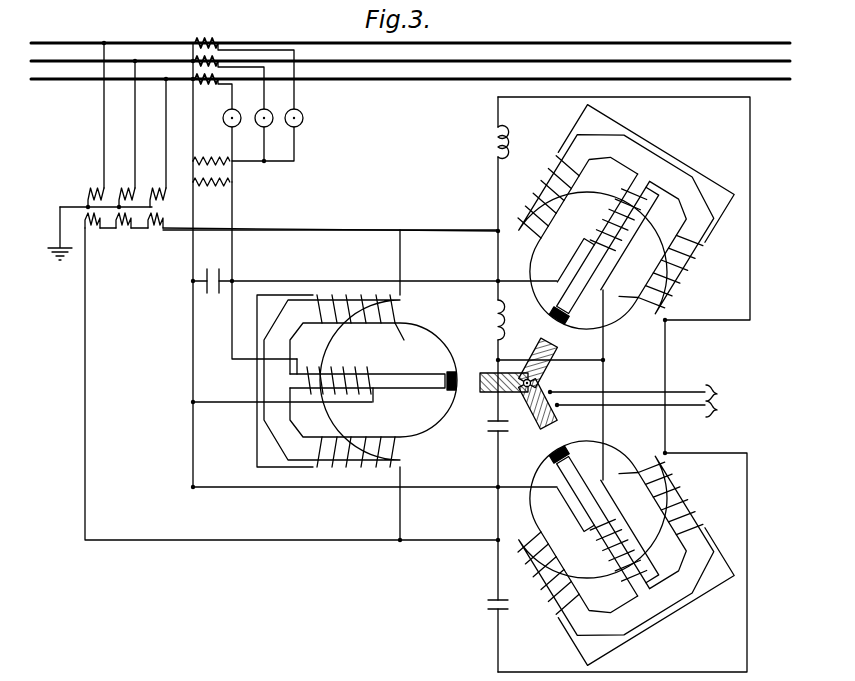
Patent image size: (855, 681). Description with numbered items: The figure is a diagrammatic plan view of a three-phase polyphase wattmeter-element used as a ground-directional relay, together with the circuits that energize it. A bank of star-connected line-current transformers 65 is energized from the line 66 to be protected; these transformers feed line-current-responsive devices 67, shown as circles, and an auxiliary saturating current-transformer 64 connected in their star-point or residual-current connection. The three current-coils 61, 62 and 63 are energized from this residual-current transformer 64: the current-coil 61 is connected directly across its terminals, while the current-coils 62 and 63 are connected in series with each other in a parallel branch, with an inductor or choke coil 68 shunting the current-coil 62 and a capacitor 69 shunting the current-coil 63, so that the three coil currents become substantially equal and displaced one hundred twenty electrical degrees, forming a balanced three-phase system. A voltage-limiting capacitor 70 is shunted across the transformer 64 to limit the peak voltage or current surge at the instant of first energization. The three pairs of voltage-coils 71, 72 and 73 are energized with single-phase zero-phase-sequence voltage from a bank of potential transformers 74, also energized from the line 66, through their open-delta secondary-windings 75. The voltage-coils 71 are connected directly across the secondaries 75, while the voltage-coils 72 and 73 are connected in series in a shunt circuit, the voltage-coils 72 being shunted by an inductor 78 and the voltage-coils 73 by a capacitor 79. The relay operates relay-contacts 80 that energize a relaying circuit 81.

The current-coil 61 is at (362, 371).
The current-coil 62 is at (618, 215).
The current-coil 63 is at (627, 540).
The auxiliary saturating current-transformer 64 is at (233, 173).
The line-current transformers 65 is at (214, 42).
The line 66 is at (553, 80).
The line-current-responsive devices 67 is at (300, 110).
The inductor or choke coil 68 is at (491, 318).
The capacitor 69 is at (490, 436).
The voltage-limiting capacitor 70 is at (212, 296).
The pair of voltage-coils 71 is at (404, 340).
The voltage-coils 72 is at (548, 242).
The voltage-coils 73 is at (574, 504).
The potential transformers 74 is at (88, 207).
The open-delta secondary-windings 75 is at (152, 229).
The inductor 78 is at (492, 140).
The capacitor 79 is at (490, 609).
The relay-contacts 80 is at (551, 392).
The relaying circuit 81 is at (627, 404).